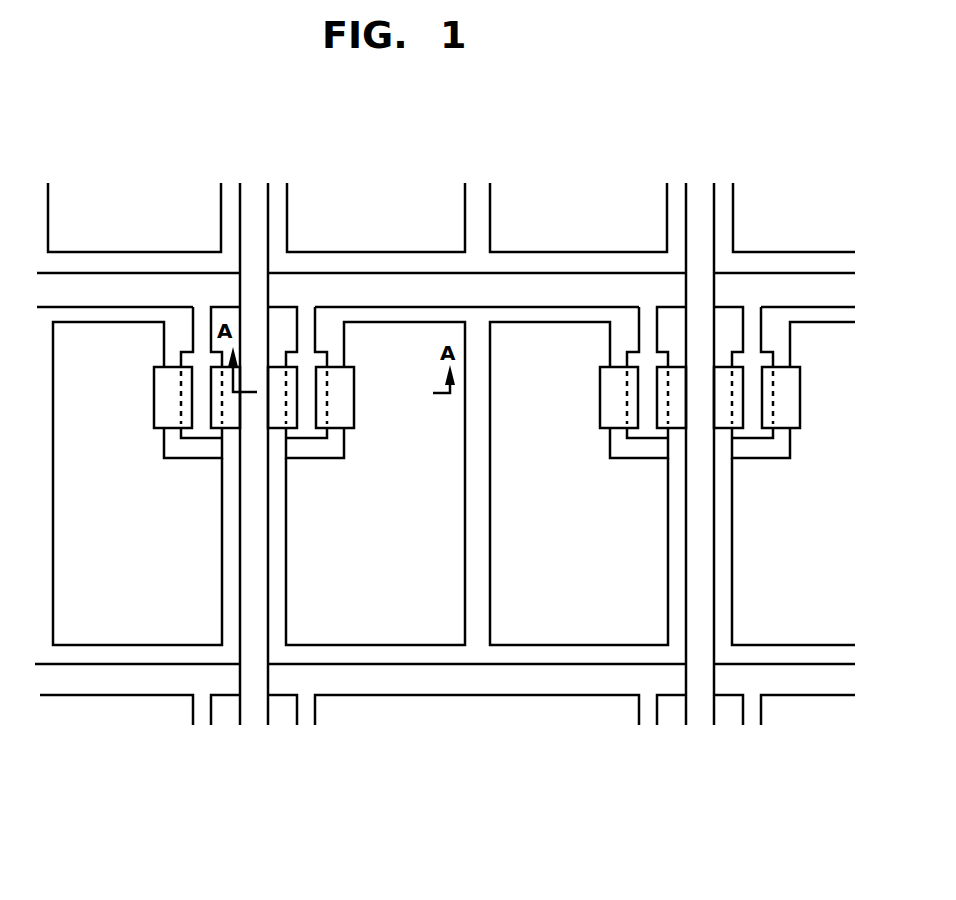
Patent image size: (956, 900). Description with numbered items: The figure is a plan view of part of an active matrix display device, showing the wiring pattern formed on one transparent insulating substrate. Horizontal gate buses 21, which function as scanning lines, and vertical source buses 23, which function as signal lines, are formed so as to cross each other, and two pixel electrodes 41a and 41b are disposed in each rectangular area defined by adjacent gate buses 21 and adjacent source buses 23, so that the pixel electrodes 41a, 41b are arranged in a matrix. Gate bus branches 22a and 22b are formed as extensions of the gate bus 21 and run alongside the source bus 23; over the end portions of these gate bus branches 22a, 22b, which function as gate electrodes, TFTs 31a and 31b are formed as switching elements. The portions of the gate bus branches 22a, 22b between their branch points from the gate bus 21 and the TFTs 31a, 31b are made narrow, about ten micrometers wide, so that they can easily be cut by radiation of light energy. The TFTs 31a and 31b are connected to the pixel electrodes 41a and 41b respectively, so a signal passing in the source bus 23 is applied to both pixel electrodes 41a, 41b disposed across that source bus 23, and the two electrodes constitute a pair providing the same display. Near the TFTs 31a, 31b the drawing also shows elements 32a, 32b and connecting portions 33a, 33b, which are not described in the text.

The gate bus 21 is at (395, 285).
The gate bus branch 22a is at (203, 322).
The gate bus branch 22b is at (305, 340).
The source bus 23 is at (252, 220).
The TFT 31a is at (203, 392).
The TFT 31b is at (305, 397).
The transistor 32a is at (232, 433).
The transistor 32b is at (276, 435).
The connection wiring 33a is at (165, 417).
The connection wiring 33b is at (343, 417).
The pixel electrode 41a is at (170, 570).
The pixel electrode 41b is at (390, 570).